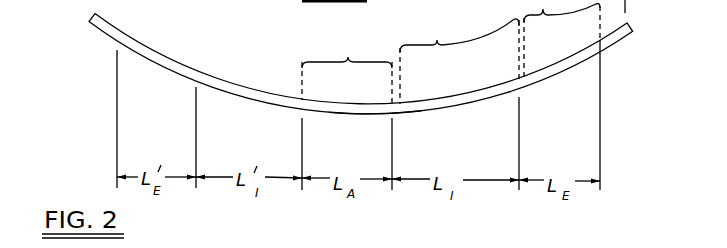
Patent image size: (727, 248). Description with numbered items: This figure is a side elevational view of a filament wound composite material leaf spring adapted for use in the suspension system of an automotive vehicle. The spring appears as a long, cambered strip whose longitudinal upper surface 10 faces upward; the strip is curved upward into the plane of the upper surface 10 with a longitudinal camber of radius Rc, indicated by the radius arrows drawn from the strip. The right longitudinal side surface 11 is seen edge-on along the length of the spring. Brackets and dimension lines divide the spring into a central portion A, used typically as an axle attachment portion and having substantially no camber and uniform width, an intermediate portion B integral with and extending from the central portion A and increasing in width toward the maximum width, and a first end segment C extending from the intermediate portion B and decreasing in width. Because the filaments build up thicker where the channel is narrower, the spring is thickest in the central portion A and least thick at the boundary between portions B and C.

The longitudinal upper surface 10 is at (246, 86).
The right longitudinal side surface 11 is at (355, 108).
The radius of longitudinal camber Rc is at (490, 88).
The central portion A is at (347, 70).
The intermediate portion B is at (459, 58).
The first segment of end portion C is at (562, 39).